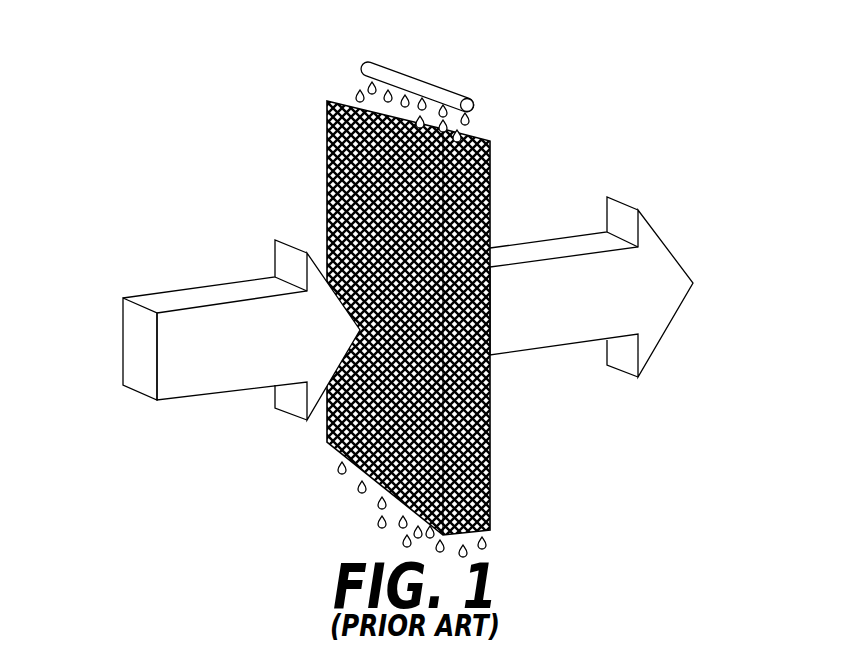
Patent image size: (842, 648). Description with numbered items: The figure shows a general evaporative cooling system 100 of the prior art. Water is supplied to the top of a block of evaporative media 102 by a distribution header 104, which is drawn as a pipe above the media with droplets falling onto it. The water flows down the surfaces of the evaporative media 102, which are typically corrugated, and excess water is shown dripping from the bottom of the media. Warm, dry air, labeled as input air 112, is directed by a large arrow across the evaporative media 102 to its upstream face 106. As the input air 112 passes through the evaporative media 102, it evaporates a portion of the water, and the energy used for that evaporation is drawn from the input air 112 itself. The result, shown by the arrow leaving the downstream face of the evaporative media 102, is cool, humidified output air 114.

The evaporative cooling system 100 is at (634, 70).
The evaporative media 102 is at (475, 474).
The distribution header 104 is at (438, 87).
The upstream face 106 is at (387, 438).
The input air 112 is at (153, 292).
The output air 114 is at (663, 332).